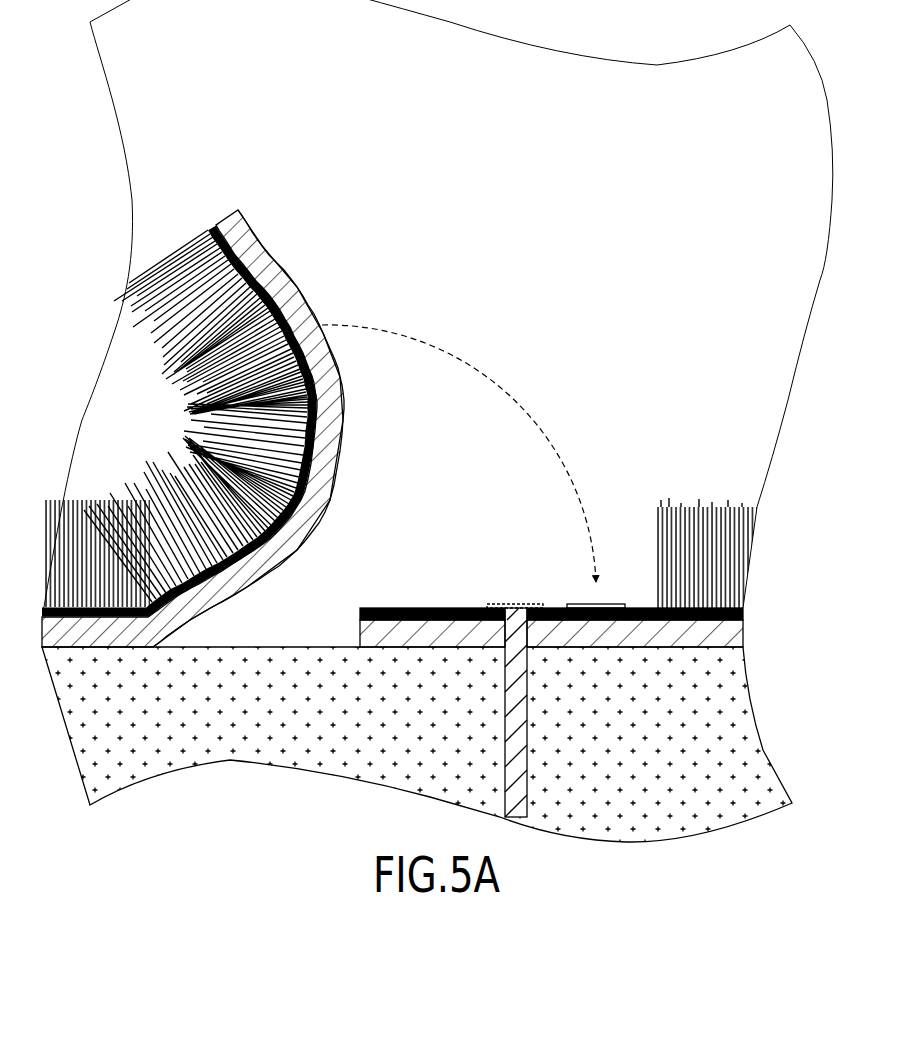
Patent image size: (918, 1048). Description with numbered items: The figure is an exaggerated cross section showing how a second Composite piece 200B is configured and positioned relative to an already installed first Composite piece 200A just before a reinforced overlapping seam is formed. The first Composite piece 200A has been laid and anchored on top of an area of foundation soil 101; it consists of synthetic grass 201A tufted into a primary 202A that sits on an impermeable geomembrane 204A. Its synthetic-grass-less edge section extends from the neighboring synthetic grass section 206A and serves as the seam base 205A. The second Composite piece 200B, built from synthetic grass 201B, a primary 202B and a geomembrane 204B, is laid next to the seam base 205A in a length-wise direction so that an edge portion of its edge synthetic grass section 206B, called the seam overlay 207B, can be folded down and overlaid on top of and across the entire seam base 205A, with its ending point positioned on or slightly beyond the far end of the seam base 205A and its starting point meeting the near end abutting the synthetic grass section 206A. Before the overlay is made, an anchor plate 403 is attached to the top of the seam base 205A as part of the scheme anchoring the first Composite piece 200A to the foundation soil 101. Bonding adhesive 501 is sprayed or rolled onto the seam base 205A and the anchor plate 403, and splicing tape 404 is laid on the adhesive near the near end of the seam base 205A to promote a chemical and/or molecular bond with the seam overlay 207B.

The foundation soil 101 is at (745, 730).
The first Composite piece 200A is at (590, 524).
The synthetic grass 201A is at (745, 505).
The primary 202A is at (745, 612).
The geomembrane 204A is at (745, 630).
The seam base 205A is at (540, 583).
The synthetic grass section 206A is at (688, 492).
The second Composite piece 200B is at (238, 371).
The synthetic grass 201B is at (178, 252).
The primary 202B is at (215, 232).
The geomembrane 204B is at (247, 412).
The edge synthetic grass section 206B is at (150, 415).
The seam overlay 207B is at (305, 270).
The anchor plate 403 is at (507, 603).
The splicing tape 404 is at (605, 600).
The bonding adhesive 501 is at (358, 471).